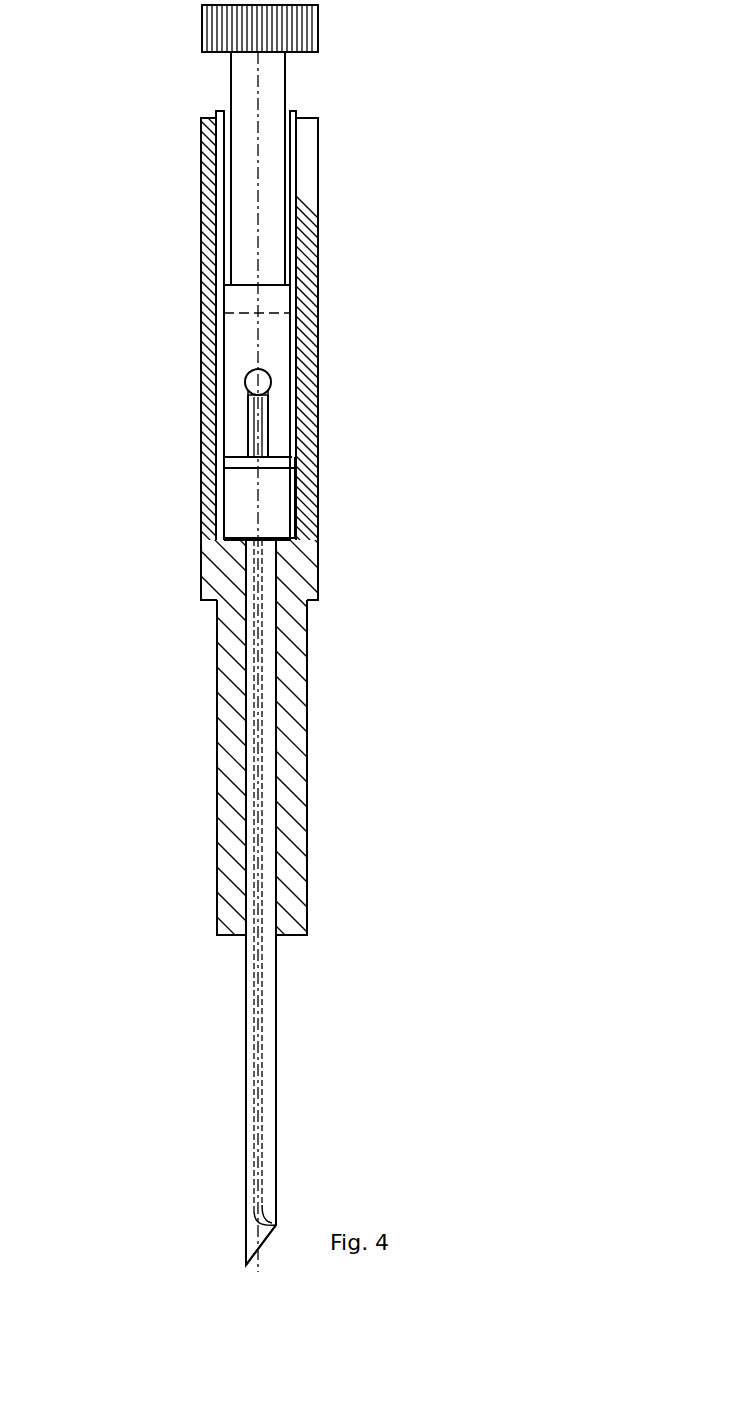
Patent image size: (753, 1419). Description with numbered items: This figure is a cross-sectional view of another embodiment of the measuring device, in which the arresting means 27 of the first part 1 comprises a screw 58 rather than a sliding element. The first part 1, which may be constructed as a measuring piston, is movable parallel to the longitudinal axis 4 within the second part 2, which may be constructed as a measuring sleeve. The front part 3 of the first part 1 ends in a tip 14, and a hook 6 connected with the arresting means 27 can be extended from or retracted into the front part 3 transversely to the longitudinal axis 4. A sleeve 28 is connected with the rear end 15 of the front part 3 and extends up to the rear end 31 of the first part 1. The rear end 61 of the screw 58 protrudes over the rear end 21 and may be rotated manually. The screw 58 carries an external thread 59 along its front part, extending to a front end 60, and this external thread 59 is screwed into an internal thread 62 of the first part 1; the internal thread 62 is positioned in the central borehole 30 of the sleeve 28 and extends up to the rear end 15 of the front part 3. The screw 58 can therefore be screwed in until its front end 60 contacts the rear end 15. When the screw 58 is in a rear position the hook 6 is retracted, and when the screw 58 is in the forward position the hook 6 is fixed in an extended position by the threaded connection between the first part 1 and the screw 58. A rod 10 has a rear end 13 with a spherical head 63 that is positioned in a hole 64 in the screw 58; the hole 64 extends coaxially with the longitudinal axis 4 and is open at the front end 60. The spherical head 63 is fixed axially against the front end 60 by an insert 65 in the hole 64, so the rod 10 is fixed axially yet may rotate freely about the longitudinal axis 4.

The first part 1 is at (320, 536).
The second part 2 is at (288, 848).
The front part 3 is at (272, 562).
The longitudinal axis 4 is at (258, 960).
The hook 6 is at (270, 1222).
The rod 10 is at (262, 698).
The rear end of the rod 13 is at (262, 408).
The tip 14 is at (257, 1248).
The rear end of the front part 15 is at (287, 475).
The rear end 21 is at (203, 127).
The arresting means 27 is at (206, 77).
The sleeve 28 is at (302, 218).
The central borehole of the sleeve 30 is at (290, 192).
The rear end of the first part 31 is at (300, 112).
The screw 58 is at (270, 246).
The external thread 59 is at (228, 303).
The front end of the screw 60 is at (235, 443).
The rear end of the screw 61 is at (305, 22).
The internal thread 62 is at (305, 463).
The spherical head 63 is at (250, 383).
The hole 64 is at (273, 383).
The insert 65 is at (250, 425).